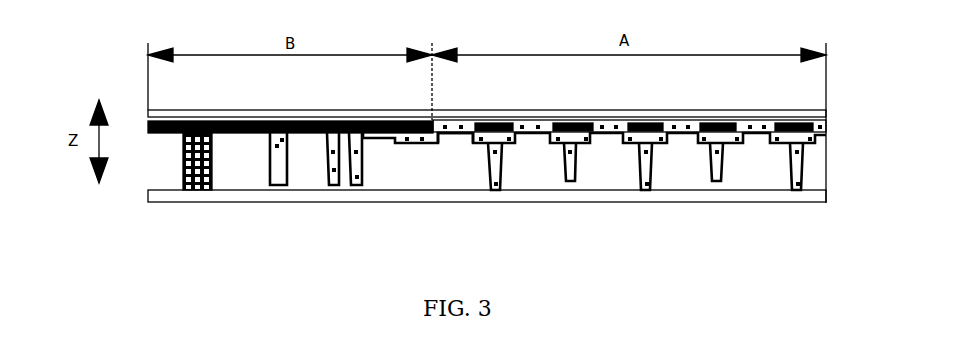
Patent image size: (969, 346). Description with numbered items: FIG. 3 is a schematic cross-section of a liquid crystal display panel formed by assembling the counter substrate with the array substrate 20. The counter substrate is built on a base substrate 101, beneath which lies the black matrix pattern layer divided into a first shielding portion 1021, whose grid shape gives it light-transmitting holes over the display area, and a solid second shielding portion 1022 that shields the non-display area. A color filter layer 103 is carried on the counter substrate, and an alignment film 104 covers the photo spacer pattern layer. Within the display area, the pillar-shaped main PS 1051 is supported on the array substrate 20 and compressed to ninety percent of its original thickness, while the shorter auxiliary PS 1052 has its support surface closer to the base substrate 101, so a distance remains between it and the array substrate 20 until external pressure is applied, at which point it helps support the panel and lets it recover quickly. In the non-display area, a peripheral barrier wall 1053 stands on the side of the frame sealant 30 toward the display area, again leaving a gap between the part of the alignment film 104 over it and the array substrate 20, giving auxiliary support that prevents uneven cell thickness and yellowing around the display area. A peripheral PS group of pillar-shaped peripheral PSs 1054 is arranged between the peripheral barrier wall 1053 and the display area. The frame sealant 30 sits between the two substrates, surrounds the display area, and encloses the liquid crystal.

The base substrate 101 is at (210, 117).
The second shielding portion 1022 is at (376, 127).
The first shielding portion 1021 is at (490, 123).
The color filter layer 103 is at (610, 131).
The alignment film 104 is at (452, 135).
The main PS 1051 is at (497, 170).
The auxiliary PS 1052 is at (569, 170).
The peripheral barrier wall 1053 is at (274, 147).
The peripheral PS 1054 is at (356, 150).
The frame sealant 30 is at (183, 165).
The array substrate 20 is at (418, 195).